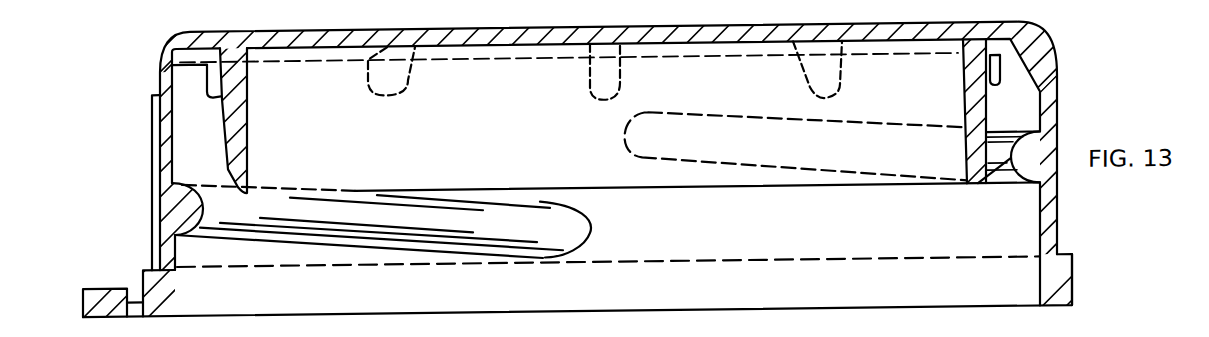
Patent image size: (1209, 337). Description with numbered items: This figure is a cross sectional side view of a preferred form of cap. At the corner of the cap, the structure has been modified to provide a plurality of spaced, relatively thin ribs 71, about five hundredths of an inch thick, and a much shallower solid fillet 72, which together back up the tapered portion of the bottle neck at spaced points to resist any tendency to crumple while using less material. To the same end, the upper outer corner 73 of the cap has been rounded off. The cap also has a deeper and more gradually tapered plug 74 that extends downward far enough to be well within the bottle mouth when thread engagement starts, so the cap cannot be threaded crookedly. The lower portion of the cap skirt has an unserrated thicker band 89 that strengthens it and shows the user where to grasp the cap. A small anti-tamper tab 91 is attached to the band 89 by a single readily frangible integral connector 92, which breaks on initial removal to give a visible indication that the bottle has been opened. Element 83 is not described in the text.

The spaced ribs 71 is at (624, 82).
The solid fillet 72 is at (189, 65).
The upper outer corner 73 is at (168, 44).
The plug 74 is at (237, 109).
The liner 83 is at (152, 124).
The unserrated thicker band 89 is at (1098, 275).
The anti-tamper tab 91 is at (83, 290).
The frangible integral connector 92 is at (134, 299).